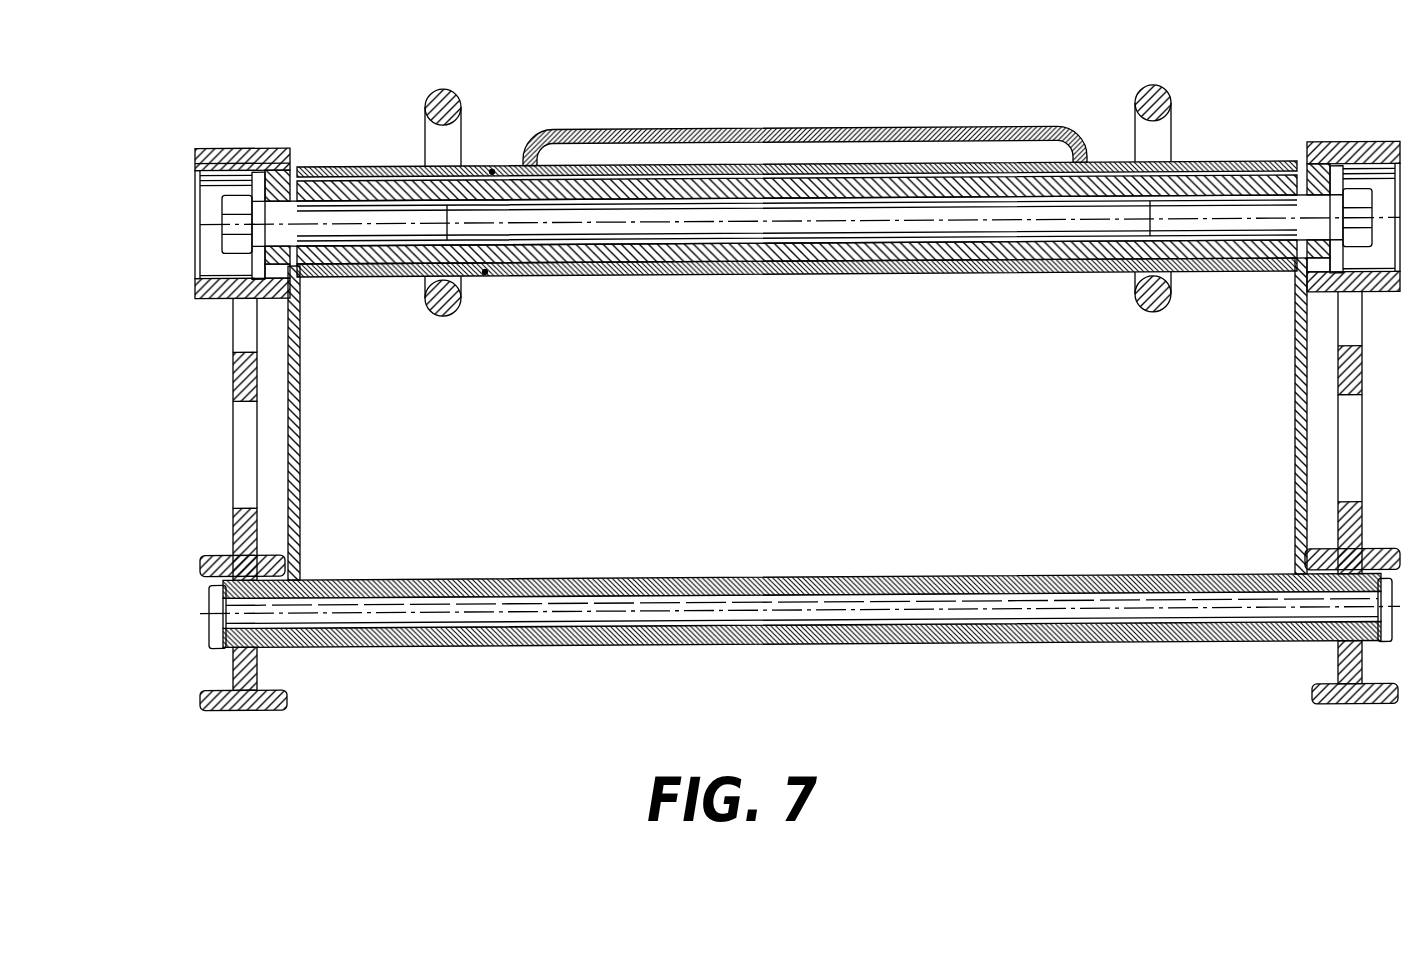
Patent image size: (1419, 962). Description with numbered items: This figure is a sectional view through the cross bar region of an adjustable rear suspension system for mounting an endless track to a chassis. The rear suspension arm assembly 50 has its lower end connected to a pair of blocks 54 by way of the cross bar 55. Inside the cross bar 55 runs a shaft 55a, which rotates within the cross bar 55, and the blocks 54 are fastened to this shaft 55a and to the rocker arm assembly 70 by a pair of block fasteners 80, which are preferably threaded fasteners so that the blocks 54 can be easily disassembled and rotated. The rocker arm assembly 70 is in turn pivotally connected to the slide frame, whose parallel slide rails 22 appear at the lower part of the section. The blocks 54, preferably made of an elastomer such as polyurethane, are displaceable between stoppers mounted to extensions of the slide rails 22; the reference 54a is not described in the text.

The slide rails 22 is at (292, 706).
The rear suspension arm assembly 50 is at (797, 126).
The blocks 54 is at (213, 141).
The end cap wall 54a is at (186, 162).
The cross bar 55 is at (330, 163).
The shaft 55a is at (492, 170).
The rocker arm assembly 70 is at (283, 324).
The block fasteners 80 is at (220, 228).